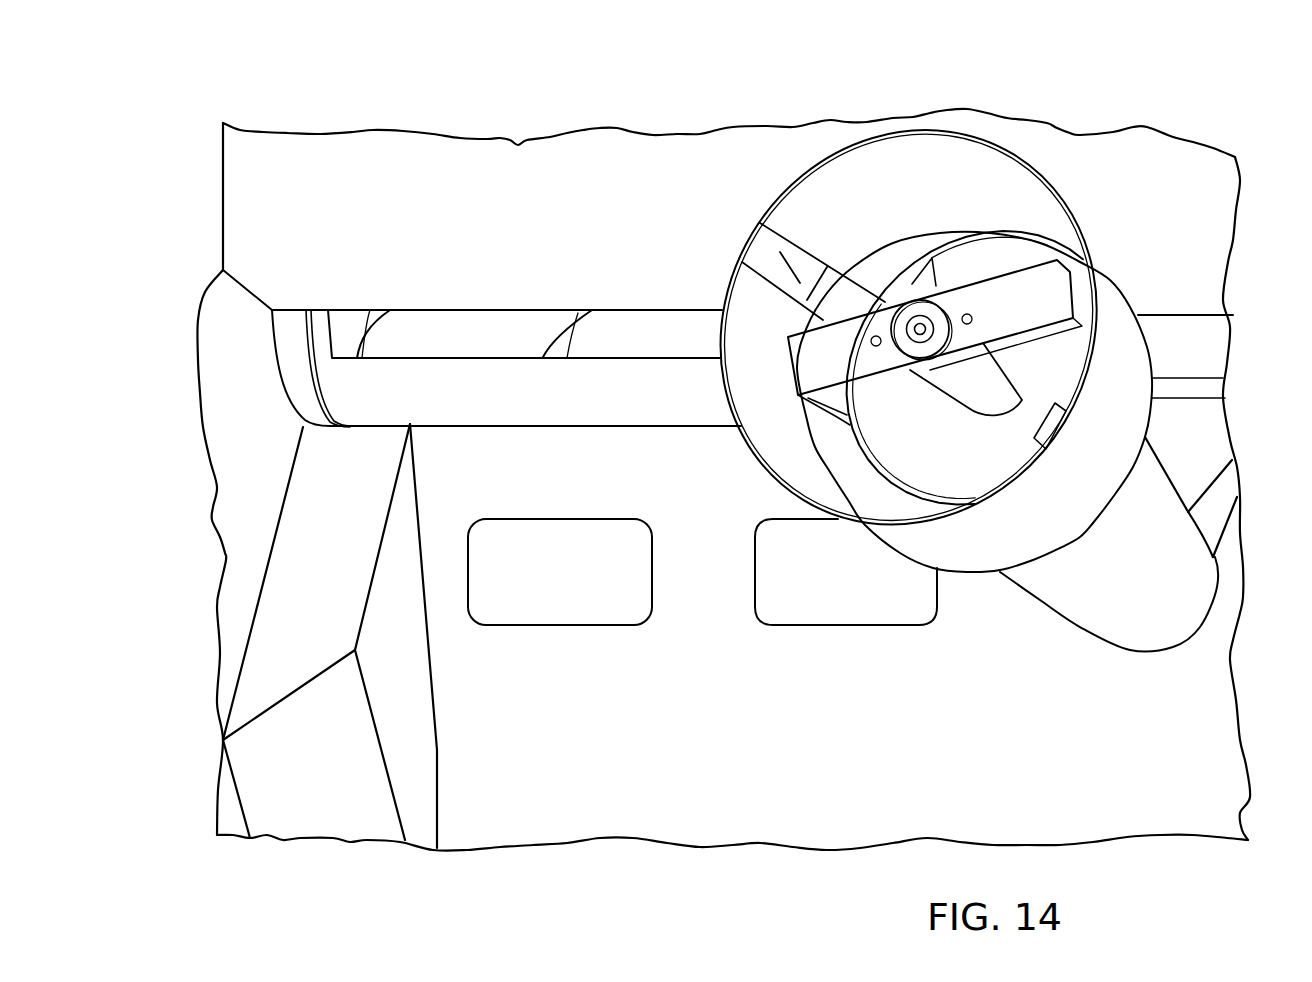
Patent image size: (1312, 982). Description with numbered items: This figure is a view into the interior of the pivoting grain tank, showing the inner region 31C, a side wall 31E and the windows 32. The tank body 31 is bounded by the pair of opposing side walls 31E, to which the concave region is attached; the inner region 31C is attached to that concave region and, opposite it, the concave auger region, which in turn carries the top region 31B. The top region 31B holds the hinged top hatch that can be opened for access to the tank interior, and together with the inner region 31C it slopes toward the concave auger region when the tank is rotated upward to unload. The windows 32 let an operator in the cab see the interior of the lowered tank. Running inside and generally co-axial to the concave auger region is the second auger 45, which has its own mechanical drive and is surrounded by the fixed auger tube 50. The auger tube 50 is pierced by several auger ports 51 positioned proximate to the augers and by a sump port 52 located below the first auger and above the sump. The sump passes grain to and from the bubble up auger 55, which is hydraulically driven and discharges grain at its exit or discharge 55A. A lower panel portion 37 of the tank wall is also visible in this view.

The main body panel 31 is at (708, 170).
The top region 31B is at (913, 128).
The inner region 31C is at (1200, 765).
The side walls 31E is at (227, 645).
The windows 32 is at (593, 597).
The lower corner panel portion 37 is at (310, 762).
The second auger 45 is at (353, 352).
The fixed auger tube 50 is at (392, 395).
The auger ports 51 is at (523, 317).
The sump port 52 is at (1203, 438).
The bubble up auger 55 is at (1150, 553).
The exit or discharge 55A is at (920, 274).